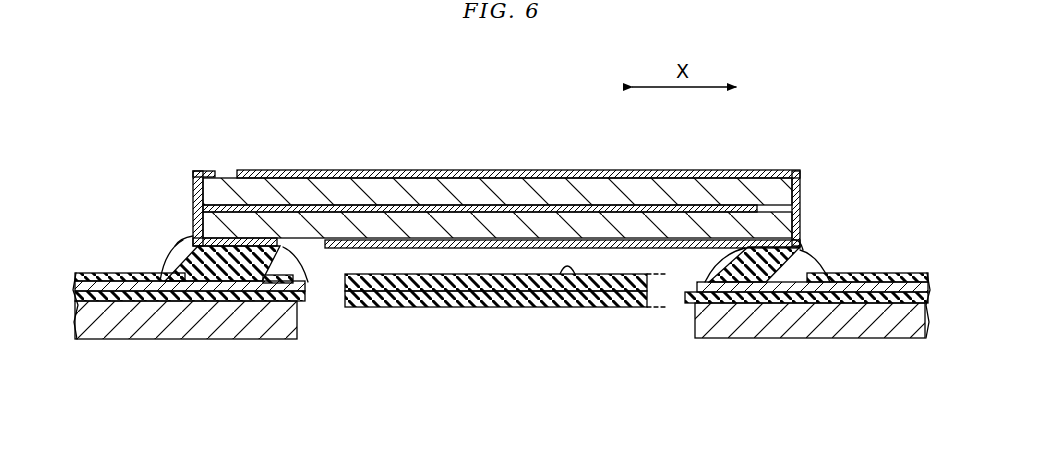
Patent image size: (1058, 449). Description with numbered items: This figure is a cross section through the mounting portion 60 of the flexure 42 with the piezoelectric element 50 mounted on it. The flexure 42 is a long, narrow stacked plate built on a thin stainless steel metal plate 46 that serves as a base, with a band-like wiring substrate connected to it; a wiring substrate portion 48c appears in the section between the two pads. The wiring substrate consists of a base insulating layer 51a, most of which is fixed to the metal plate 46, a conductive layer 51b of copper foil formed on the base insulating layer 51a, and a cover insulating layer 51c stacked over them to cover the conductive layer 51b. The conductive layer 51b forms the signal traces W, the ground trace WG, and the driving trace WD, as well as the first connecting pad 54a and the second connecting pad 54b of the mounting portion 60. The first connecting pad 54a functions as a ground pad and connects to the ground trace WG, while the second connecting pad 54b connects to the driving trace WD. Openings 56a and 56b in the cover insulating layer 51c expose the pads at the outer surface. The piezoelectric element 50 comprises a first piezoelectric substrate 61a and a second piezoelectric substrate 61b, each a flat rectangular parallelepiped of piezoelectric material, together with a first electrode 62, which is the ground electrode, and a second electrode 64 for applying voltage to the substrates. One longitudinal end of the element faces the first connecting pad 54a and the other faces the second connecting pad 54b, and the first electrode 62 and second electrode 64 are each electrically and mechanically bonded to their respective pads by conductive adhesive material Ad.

The piezoelectric element 50 is at (474, 160).
The first piezoelectric substrate 61a is at (601, 226).
The second piezoelectric substrate 61b is at (528, 190).
The first electrode 62 is at (180, 192).
The second electrode 64 is at (808, 182).
The metal plate 46 is at (118, 320).
The flexure 42 is at (700, 351).
The wiring substrate portion 48c is at (444, 316).
The base insulating layer 51a is at (145, 290).
The conductive layer 51b is at (90, 300).
The cover insulating layer 51c is at (93, 273).
The first connecting pad 54a is at (252, 268).
The second connecting pad 54b is at (743, 270).
The opening 56a is at (197, 270).
The opening 56b is at (808, 258).
The conductive adhesive material Ad is at (300, 283).
The ground trace WG is at (130, 273).
The driving trace WD is at (872, 272).
The signal traces W is at (397, 308).
The mounting portion 60 is at (660, 340).